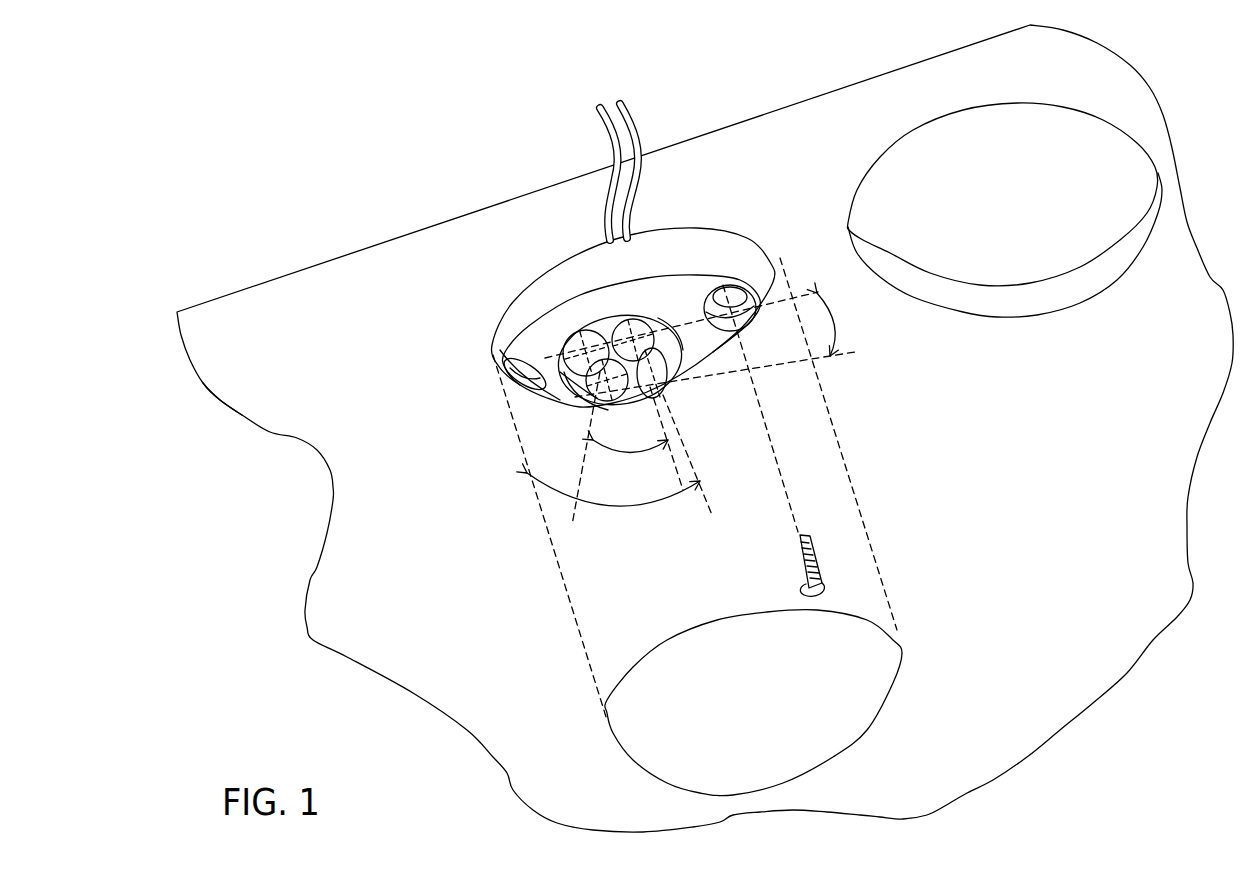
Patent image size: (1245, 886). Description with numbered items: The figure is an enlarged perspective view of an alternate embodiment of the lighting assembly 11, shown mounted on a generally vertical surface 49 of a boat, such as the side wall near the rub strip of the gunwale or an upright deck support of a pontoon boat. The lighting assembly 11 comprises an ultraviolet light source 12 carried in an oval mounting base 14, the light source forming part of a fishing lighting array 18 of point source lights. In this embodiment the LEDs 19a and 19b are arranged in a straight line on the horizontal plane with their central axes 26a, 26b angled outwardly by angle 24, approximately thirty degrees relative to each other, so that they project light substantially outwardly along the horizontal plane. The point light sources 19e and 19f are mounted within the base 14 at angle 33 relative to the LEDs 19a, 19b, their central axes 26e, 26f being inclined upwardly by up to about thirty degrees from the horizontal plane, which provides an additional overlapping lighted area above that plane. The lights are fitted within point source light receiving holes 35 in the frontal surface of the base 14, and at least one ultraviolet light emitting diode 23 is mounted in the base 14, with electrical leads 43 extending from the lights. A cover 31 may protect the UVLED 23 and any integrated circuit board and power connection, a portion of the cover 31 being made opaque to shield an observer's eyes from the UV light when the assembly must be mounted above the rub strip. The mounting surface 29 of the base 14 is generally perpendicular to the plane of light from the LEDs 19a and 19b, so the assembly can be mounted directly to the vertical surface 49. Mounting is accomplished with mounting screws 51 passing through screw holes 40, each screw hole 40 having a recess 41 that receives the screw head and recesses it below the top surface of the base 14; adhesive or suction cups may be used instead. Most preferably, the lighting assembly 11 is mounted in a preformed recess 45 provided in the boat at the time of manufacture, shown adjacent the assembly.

The lighting assembly 11 is at (705, 428).
The ultraviolet light source 12 is at (648, 318).
The mounting base 14 is at (580, 257).
The array 18 is at (306, 496).
The LED 19a is at (600, 390).
The LED 19b is at (662, 391).
The point light source 19e is at (667, 316).
The point light source 19f is at (597, 392).
The ultraviolet light emitting diode 23 is at (576, 342).
The angle 24 is at (643, 527).
The central axis 26a is at (688, 505).
The central axis 26b is at (573, 523).
The central axis 26e is at (683, 443).
The central axis 26f is at (520, 483).
The mounting surface 29 is at (568, 252).
The cover 31 is at (888, 683).
The angle 33 is at (835, 322).
The point source light receiving holes 35 is at (603, 326).
The screw holes 40 is at (737, 290).
The recess 41 is at (515, 365).
The electrical leads 43 is at (602, 104).
The preformed recess 45 is at (1023, 191).
The vertical surface 49 is at (1068, 423).
The mounting screws 51 is at (806, 590).